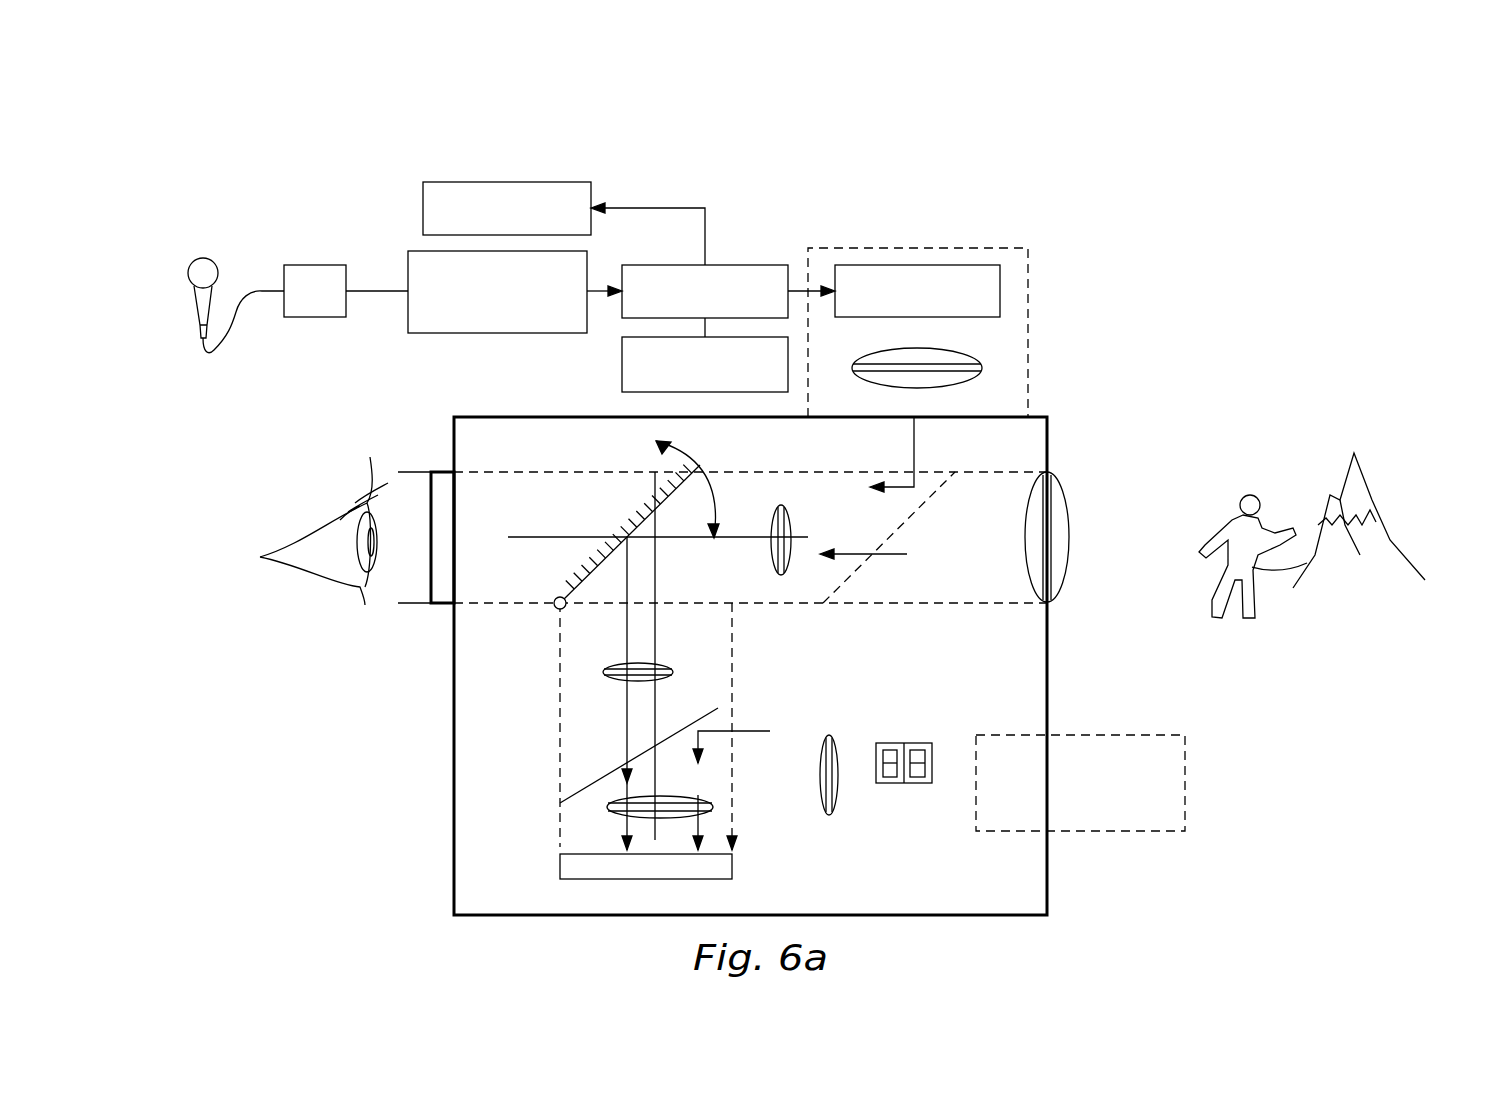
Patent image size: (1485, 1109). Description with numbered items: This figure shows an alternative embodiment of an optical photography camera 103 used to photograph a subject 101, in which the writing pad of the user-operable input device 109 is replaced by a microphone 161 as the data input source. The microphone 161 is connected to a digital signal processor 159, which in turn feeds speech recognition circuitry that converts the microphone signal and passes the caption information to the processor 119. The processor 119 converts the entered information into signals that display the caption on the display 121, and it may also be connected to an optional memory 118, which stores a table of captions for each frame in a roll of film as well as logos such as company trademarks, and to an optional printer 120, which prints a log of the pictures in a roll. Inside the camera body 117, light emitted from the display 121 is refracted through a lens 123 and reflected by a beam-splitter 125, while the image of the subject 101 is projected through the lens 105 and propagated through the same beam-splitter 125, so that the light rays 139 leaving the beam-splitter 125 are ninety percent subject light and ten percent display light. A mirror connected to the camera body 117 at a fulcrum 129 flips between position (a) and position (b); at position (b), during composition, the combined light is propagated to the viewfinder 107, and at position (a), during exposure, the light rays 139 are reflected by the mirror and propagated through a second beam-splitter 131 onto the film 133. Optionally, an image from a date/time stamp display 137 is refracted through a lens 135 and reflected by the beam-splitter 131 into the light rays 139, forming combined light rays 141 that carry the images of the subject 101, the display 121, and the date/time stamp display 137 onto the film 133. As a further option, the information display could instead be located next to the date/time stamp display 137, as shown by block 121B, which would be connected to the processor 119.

The subject 101 is at (1347, 445).
The camera 103 is at (1295, 399).
The lens 105 is at (1048, 497).
The viewfinder 107 is at (428, 590).
The user-operable input device 109 is at (408, 310).
The camera body 117 is at (1047, 705).
The memory 118 is at (622, 370).
The processor 119 is at (743, 268).
The printer 120 is at (598, 188).
The display 121 is at (940, 272).
The block 121B is at (1185, 778).
The lens 123 is at (983, 366).
The beam-splitter 125 is at (900, 535).
The fulcrum 129 is at (558, 598).
The beam-splitter 131 is at (580, 792).
The film 133 is at (566, 868).
The lens 135 is at (838, 800).
The date/time stamp display 137 is at (906, 743).
The light rays 139 is at (788, 483).
The light rays 141 is at (612, 808).
The digital signal processor 159 is at (318, 265).
The microphone 161 is at (212, 258).